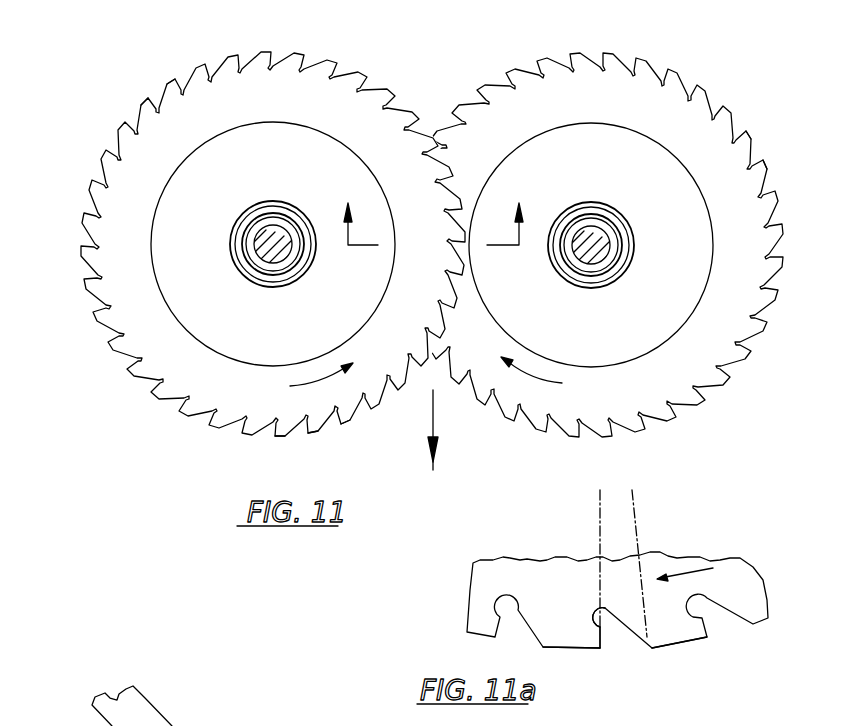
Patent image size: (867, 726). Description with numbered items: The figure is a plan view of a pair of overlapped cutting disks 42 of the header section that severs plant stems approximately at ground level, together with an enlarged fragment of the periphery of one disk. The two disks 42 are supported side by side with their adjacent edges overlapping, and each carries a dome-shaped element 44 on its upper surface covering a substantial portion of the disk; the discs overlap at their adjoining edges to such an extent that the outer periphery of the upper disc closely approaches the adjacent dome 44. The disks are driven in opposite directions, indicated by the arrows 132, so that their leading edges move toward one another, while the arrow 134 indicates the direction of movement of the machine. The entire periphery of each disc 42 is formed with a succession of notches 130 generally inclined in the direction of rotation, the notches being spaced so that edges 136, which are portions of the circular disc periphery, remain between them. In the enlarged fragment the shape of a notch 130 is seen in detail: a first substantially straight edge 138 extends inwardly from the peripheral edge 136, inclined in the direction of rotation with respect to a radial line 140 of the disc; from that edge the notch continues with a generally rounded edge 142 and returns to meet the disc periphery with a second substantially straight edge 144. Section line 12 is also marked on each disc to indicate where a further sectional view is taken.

In FIG. 11, the section line indicator 12 is at (432, 214).
In FIG. 11, the disk 42 is at (423, 244).
In FIG. 11, the dome-shaped element 44 is at (223, 155).
In FIG. 11, the notch 130 is at (312, 57).
In FIG. 11a, the notch 130 is at (590, 597).
In FIG. 11, the arrow indicating direction of rotation 132 is at (318, 384).
In FIG. 11a, the arrow indicating direction of rotation 132 is at (698, 573).
In FIG. 11, the arrow indicating direction of machine movement 134 is at (435, 413).
In FIG. 11, the peripheral edge 136 is at (196, 70).
In FIG. 11a, the peripheral edge 136 is at (570, 648).
In FIG. 11a, the first edge 138 is at (633, 642).
In FIG. 11a, the radial line 140 is at (638, 538).
In FIG. 11a, the rounded edge 142 is at (595, 612).
In FIG. 11a, the second edge 144 is at (600, 640).